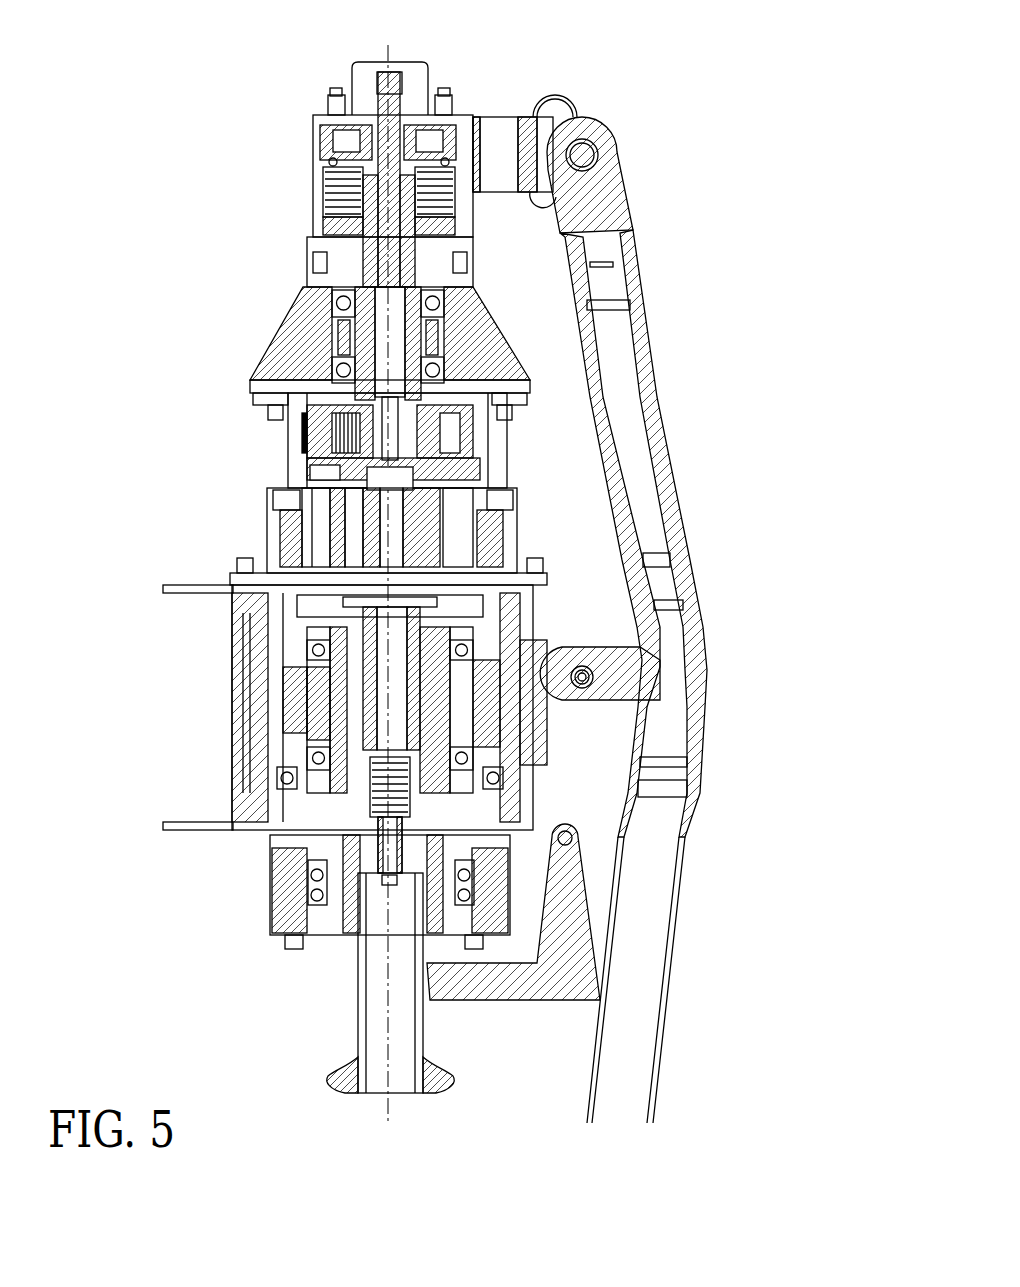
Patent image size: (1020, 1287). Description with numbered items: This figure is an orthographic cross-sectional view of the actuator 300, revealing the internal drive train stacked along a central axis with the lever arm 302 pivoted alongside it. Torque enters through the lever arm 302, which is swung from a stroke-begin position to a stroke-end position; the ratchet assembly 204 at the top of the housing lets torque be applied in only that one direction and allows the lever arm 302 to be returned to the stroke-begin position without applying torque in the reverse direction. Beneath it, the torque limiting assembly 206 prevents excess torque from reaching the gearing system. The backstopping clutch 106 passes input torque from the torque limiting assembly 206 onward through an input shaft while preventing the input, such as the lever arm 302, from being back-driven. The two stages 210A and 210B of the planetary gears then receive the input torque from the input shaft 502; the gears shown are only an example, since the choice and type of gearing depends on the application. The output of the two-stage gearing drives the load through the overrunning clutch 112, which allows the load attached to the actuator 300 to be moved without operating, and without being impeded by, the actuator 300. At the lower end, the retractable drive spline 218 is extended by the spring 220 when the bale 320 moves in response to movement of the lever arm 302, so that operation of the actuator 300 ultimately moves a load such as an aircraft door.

The actuator 300 is at (695, 97).
The ratchet assembly 204 is at (326, 137).
The torque limiting assembly 206 is at (316, 195).
The backstopping clutch 106 is at (337, 332).
The input shaft 502 is at (383, 355).
The first stage of the planetary gears 210A is at (330, 435).
The second stage of the planetary gears 210B is at (285, 528).
The overrunning clutch 112 is at (308, 695).
The retractable drive spline 218 is at (373, 710).
The spring 220 is at (405, 778).
The lever arm 302 is at (655, 378).
The bale 320 is at (553, 960).